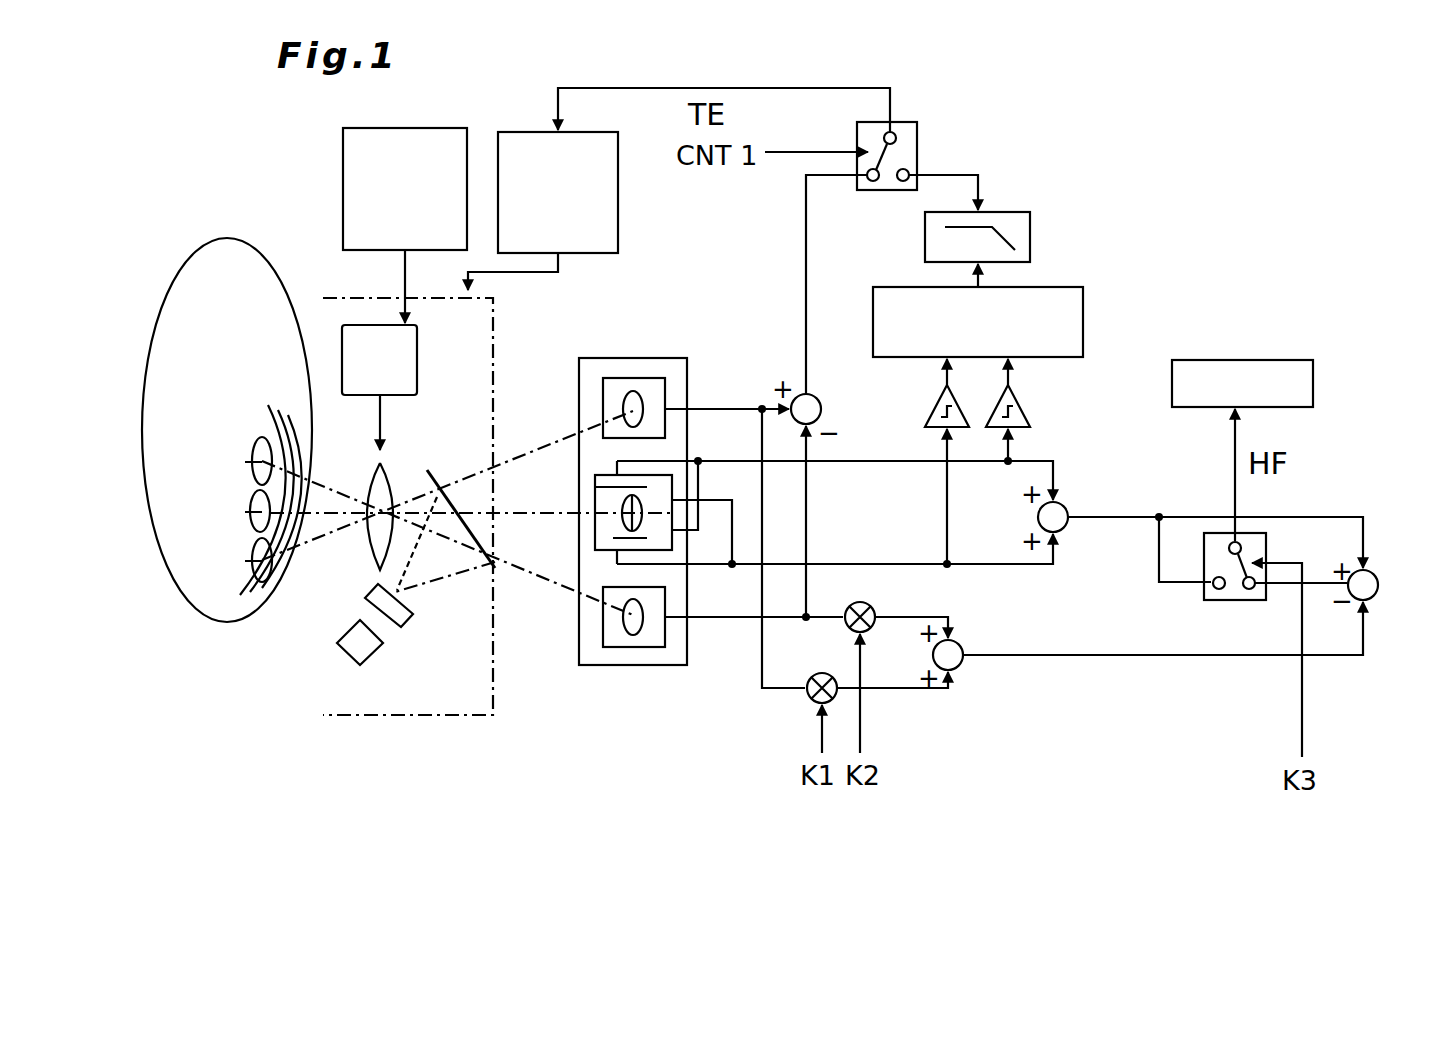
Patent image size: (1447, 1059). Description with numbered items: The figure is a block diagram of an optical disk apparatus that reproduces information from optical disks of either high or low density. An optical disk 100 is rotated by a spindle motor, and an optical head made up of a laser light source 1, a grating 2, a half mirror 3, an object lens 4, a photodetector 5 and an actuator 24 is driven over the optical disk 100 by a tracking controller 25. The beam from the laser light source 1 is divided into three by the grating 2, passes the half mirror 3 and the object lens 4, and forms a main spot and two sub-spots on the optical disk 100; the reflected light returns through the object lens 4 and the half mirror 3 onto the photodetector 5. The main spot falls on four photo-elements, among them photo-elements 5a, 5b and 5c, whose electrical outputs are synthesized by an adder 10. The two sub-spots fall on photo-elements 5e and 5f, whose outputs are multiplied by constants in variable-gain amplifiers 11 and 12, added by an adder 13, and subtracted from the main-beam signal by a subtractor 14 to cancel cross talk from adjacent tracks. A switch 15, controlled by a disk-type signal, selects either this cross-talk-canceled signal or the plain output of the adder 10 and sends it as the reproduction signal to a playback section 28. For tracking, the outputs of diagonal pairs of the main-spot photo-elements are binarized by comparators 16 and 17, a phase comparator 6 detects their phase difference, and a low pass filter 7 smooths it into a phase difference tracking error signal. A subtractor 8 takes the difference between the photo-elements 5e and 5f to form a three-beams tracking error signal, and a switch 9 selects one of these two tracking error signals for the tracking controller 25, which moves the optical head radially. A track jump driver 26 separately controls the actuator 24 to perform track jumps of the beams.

The laser light source 1 is at (367, 655).
The grating 2 is at (413, 617).
The half mirror 3 is at (428, 468).
The object lens 4 is at (378, 462).
The photodetector 5 is at (672, 358).
The photo-element 5a is at (605, 500).
The photo-element 5b is at (647, 487).
The photo-element 5c is at (613, 538).
The photo-element 5e is at (612, 393).
The photo-element 5f is at (650, 632).
The phase comparator 6 is at (1083, 310).
The low pass filter 7 is at (1030, 230).
The subtractor 8 is at (820, 400).
The switch 9 is at (917, 152).
The adder 10 is at (1068, 507).
The amplifier 11 is at (807, 700).
The amplifier 12 is at (872, 606).
The adder 13 is at (960, 668).
The subtractor 14 is at (1375, 578).
The switch 15 is at (1251, 601).
The comparator 16 is at (930, 398).
The comparator 17 is at (1023, 400).
The actuator 24 is at (417, 352).
The tracking controller 25 is at (618, 196).
The track jump driver 26 is at (343, 185).
The playback section 28 is at (1235, 360).
The optical disk 100 is at (293, 312).